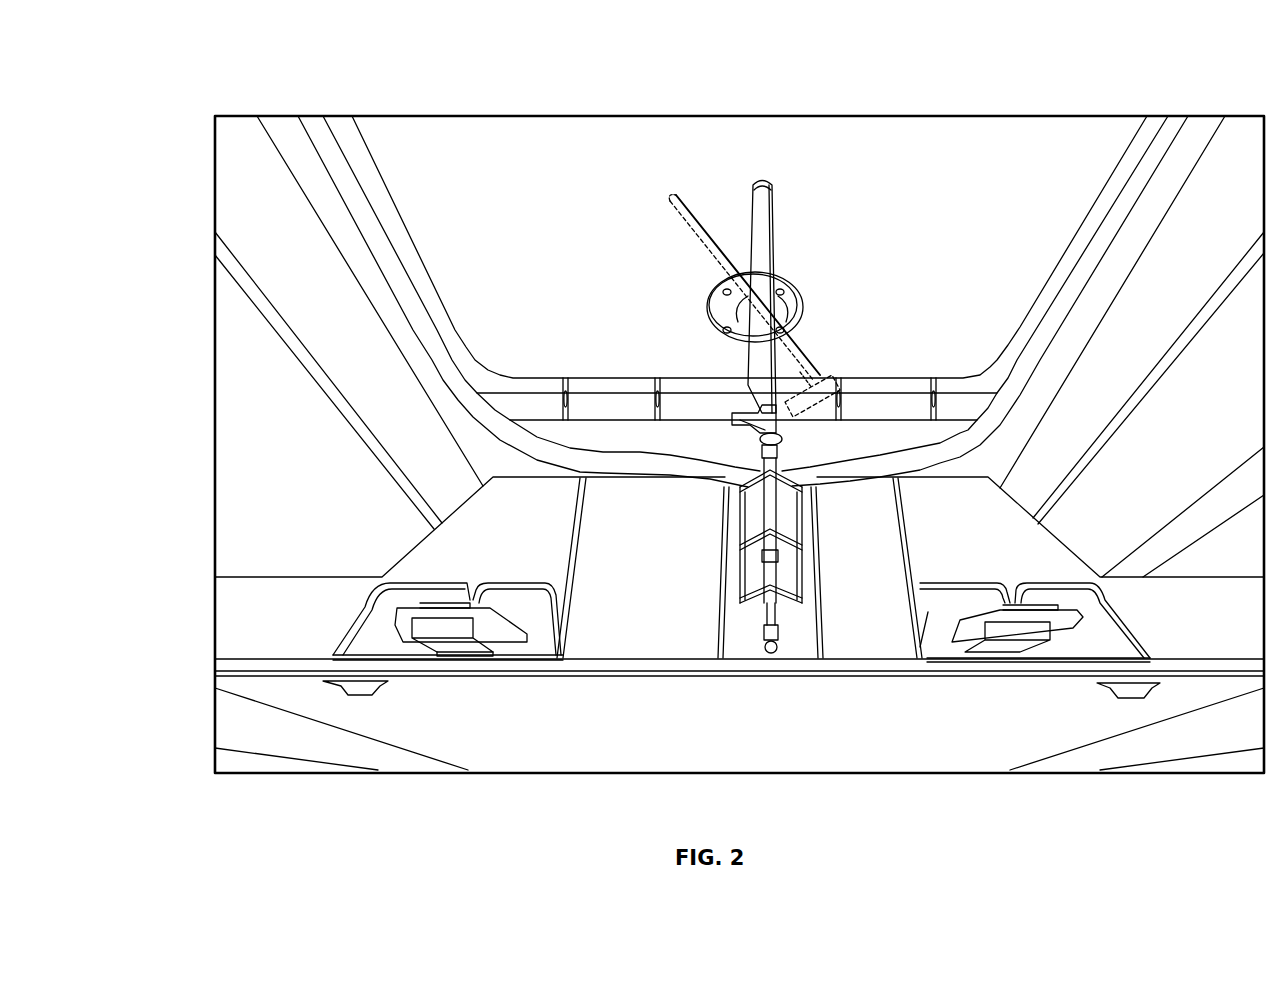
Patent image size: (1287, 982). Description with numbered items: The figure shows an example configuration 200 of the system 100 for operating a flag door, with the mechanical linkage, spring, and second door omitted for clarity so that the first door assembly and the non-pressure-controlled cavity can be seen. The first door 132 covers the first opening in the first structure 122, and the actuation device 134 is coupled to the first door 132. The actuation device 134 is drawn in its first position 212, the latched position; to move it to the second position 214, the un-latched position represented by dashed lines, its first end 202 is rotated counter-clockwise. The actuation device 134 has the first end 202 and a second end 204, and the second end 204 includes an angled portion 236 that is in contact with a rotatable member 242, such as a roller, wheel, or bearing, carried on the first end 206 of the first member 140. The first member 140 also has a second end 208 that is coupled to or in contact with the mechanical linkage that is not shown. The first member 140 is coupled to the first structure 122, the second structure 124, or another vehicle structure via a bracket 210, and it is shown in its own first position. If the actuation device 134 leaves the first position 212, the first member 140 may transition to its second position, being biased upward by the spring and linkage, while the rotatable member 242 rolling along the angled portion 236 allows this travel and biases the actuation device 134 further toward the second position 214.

The system 100 is at (262, 805).
The example configuration 200 is at (134, 112).
The first structure 122 is at (327, 345).
The first door 132 is at (918, 211).
The second structure 124 is at (843, 722).
The actuation device 134 is at (760, 268).
The first position 212 is at (762, 225).
The first end 202 is at (762, 178).
The second position 214 is at (700, 243).
The angled portion 236 is at (741, 415).
The second end 204 is at (760, 442).
The rotatable member 242 is at (777, 437).
The first end 206 is at (780, 467).
The first member 140 is at (770, 515).
The bracket 210 is at (790, 567).
The second end 208 is at (765, 650).